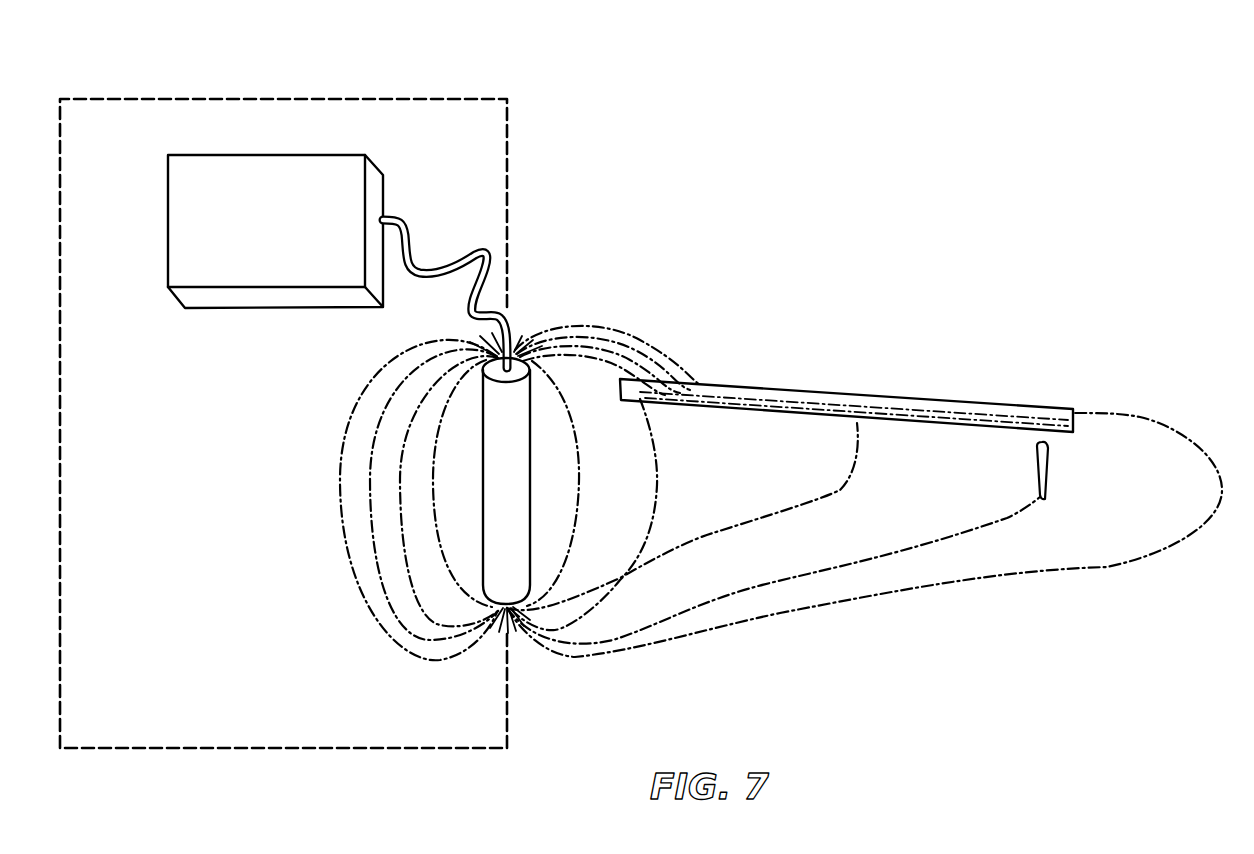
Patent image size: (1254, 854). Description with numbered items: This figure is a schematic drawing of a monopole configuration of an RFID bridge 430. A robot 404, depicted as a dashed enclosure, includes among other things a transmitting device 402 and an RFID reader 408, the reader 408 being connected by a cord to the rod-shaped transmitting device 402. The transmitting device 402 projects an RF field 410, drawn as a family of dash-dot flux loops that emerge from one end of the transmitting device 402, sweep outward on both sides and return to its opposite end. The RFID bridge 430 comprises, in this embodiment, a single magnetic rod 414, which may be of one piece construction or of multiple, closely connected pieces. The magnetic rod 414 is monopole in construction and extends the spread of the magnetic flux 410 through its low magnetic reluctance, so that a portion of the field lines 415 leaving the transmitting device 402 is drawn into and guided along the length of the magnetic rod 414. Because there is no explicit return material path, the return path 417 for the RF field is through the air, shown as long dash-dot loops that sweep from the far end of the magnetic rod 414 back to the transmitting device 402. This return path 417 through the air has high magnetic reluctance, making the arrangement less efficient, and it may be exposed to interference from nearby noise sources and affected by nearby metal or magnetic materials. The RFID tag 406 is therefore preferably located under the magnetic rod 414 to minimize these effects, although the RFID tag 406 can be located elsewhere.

The transmitting device 402 is at (493, 572).
The robot 404 is at (375, 80).
The RFID tag 406 is at (1045, 492).
The RFID reader 408 is at (290, 228).
The RF field 410 is at (317, 487).
The magnetic rod 414 is at (1043, 420).
The field lines coupled into the magnetic rod 415 is at (613, 340).
The return path 417 is at (843, 567).
The RFID bridge 430 is at (888, 316).